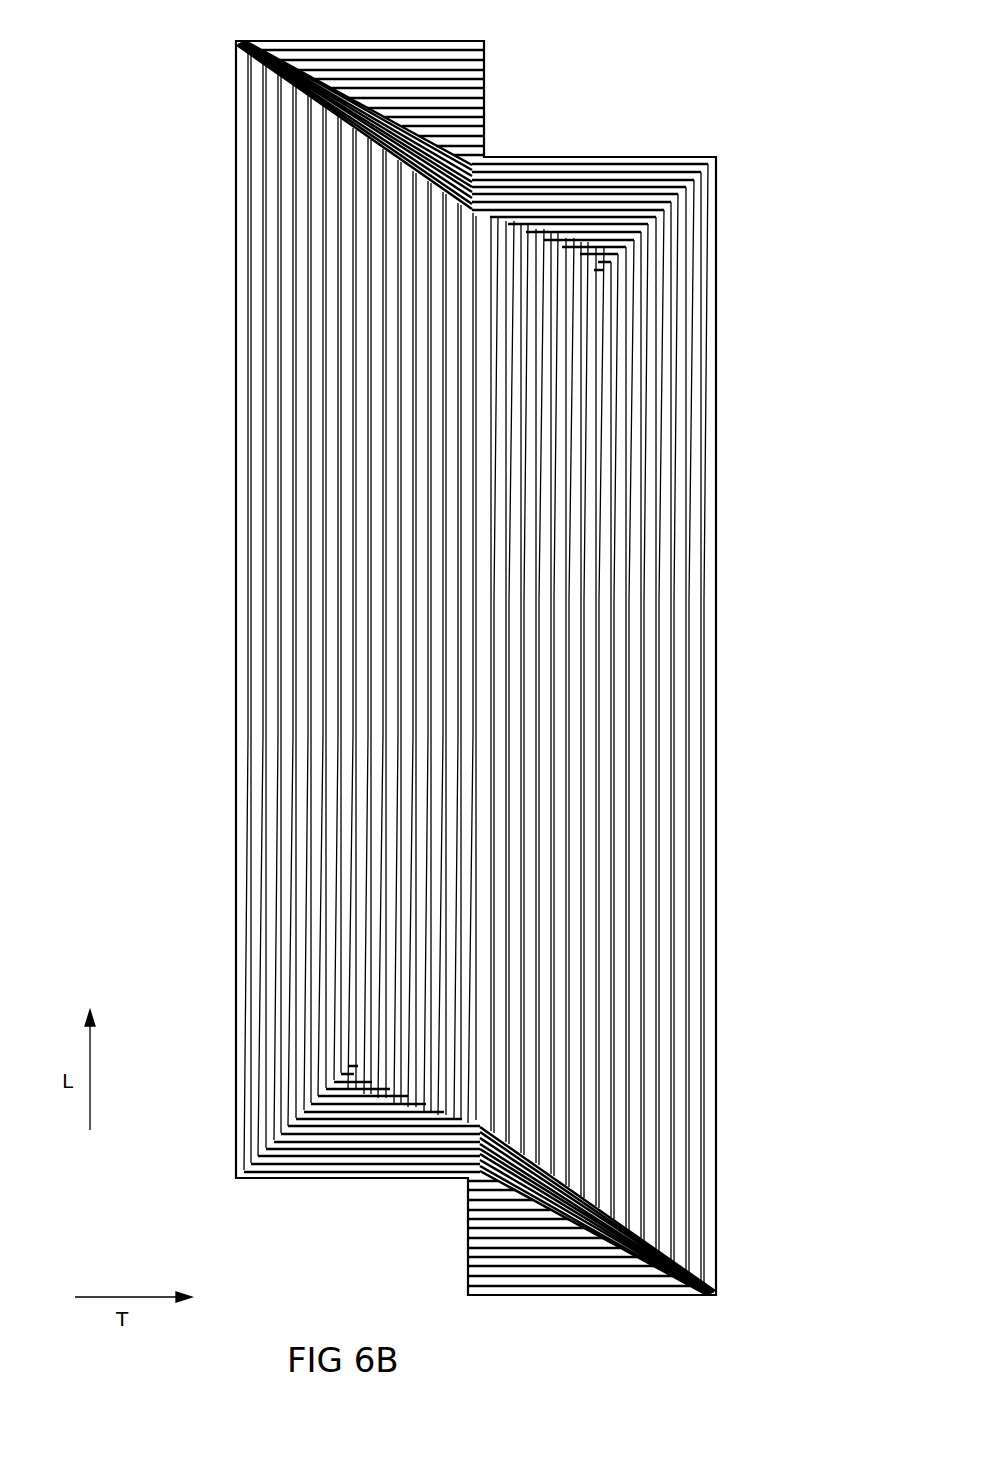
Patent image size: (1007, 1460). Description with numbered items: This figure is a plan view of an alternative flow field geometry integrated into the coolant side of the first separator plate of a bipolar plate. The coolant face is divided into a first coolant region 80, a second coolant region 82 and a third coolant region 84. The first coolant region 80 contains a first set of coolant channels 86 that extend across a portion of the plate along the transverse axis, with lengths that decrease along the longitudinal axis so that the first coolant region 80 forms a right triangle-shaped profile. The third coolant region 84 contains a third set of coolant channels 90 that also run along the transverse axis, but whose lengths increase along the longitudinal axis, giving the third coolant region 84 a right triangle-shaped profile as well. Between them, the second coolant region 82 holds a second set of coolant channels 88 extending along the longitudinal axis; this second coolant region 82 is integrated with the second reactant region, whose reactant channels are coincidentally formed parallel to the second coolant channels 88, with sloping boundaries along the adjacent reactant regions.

The first coolant region 80 is at (628, 1292).
The second coolant region 82 is at (722, 650).
The third coolant region 84 is at (432, 40).
The first set of coolant channels 86 is at (503, 1286).
The second set of coolant channels 88 is at (666, 772).
The third set of coolant channels 90 is at (447, 91).